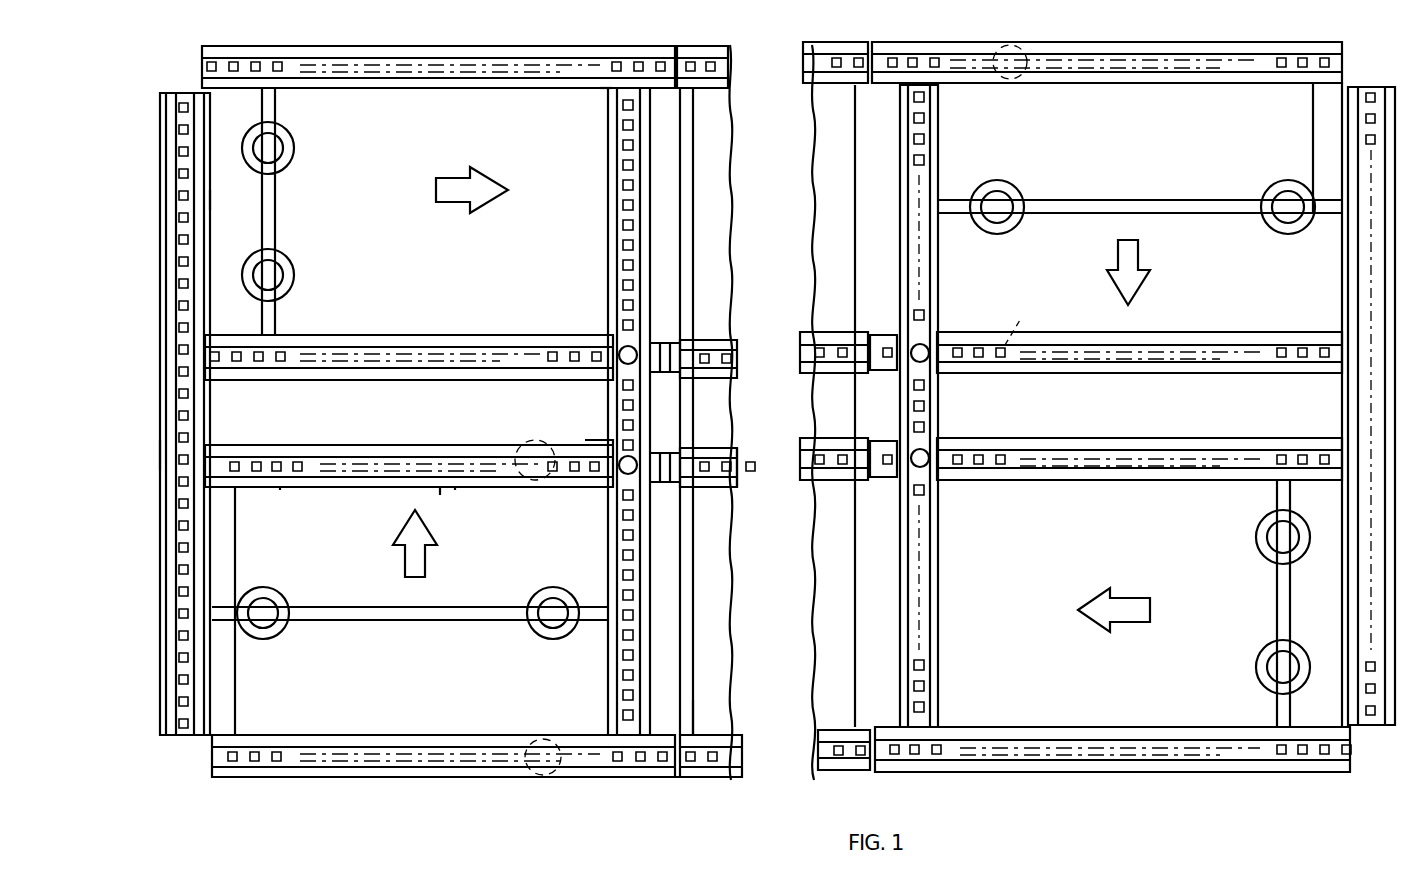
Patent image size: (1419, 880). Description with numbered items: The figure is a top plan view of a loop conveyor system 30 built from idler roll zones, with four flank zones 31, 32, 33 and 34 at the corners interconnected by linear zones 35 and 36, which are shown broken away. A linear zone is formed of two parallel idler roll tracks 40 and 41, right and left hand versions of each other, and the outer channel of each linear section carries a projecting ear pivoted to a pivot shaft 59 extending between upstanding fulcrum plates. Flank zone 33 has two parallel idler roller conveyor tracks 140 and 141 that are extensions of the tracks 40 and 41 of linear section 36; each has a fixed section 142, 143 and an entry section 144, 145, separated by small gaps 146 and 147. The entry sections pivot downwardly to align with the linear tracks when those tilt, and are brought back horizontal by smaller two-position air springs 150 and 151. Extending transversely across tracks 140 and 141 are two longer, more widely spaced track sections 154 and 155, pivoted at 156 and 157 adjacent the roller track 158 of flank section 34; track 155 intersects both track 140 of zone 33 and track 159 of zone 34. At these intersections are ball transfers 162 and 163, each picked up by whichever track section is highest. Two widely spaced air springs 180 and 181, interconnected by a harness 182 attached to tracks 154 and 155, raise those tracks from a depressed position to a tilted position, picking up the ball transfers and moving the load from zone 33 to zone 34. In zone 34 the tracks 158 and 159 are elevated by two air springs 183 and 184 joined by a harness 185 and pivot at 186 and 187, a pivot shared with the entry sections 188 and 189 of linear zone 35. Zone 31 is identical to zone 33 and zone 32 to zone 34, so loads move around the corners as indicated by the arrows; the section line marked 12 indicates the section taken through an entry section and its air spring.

The loop conveyor system 30 is at (1150, 35).
The flank zone 31 is at (1283, 114).
The flank zone 32 is at (1186, 696).
The flank zone 33 is at (260, 709).
The flank zone 34 is at (228, 200).
The linear zone 35 is at (816, 140).
The linear zone 36 is at (727, 722).
The idler roll track 40 is at (708, 448).
The idler roll track 41 is at (716, 780).
The pivot shaft 59 is at (672, 780).
The idler roller conveyor track 140 is at (318, 448).
The idler roller conveyor track 141 is at (331, 780).
The fixed section 142 is at (284, 492).
The fixed section 143 is at (282, 780).
The entry section 144 is at (463, 490).
The entry section 145 is at (485, 738).
The gap 146 is at (445, 446).
The gap 147 is at (463, 780).
The two-position air spring 150 is at (535, 440).
The two-position air spring 151 is at (560, 772).
The track section 154 is at (160, 470).
The track section 155 is at (610, 285).
The pivot 156 is at (158, 96).
The pivot 157 is at (606, 92).
The roller track 158 is at (428, 46).
The roller track 159 is at (400, 335).
The ball transfer 162 is at (622, 348).
The ball transfer 163 is at (622, 474).
The air spring 180 is at (282, 595).
The air spring 181 is at (566, 590).
The harness 182 is at (400, 607).
The air spring 183 is at (294, 150).
The air spring 184 is at (294, 272).
The harness 185 is at (275, 218).
The pivot 186 is at (673, 90).
The pivot 187 is at (692, 412).
The entry section 188 is at (722, 48).
The entry section 189 is at (712, 332).
The section line 12- 12 is at (580, 718).